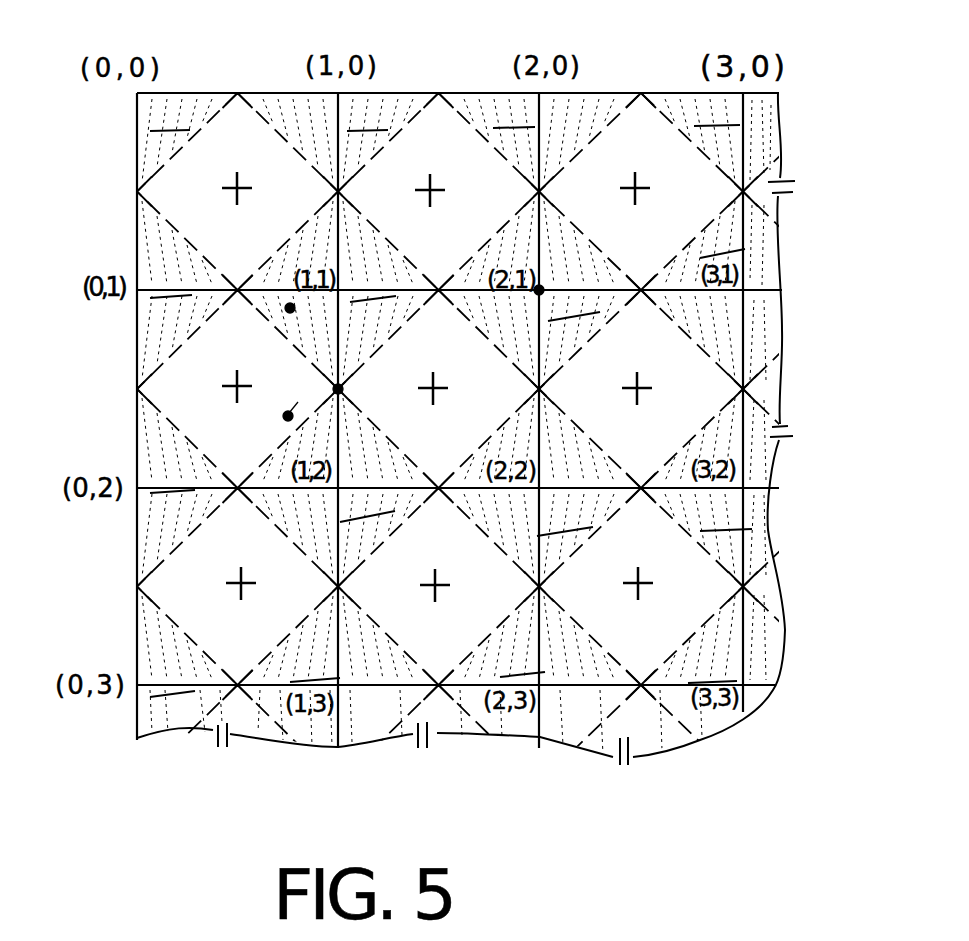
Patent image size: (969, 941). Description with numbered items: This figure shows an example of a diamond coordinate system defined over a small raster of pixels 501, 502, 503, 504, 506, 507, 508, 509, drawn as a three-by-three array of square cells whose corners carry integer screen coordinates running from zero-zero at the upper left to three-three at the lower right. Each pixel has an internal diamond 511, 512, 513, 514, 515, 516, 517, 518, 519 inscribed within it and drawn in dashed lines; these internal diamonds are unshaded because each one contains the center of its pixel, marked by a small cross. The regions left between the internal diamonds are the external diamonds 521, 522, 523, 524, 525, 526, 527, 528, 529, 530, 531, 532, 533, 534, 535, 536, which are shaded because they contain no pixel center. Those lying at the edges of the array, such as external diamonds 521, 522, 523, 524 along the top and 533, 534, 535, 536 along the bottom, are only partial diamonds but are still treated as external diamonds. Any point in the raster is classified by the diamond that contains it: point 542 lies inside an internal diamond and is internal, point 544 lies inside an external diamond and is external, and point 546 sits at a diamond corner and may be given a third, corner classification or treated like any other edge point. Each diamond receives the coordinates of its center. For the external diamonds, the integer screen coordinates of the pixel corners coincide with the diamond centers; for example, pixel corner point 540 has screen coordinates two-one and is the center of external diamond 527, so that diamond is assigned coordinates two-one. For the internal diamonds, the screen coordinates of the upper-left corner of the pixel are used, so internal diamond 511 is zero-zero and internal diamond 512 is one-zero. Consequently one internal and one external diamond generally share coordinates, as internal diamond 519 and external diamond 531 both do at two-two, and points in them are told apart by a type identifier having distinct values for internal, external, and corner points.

The pixel 501 is at (188, 93).
The pixel 502 is at (380, 93).
The pixel 503 is at (580, 93).
The pixel 504 is at (137, 322).
The pixel 506 is at (742, 318).
The pixel 507 is at (150, 522).
The pixel 508 is at (360, 733).
The pixel 509 is at (737, 657).
The internal diamond 511 is at (265, 253).
The internal diamond 512 is at (457, 240).
The internal diamond 513 is at (664, 241).
The internal diamond 514 is at (260, 453).
The internal diamond 515 is at (462, 441).
The internal diamond 516 is at (660, 436).
The internal diamond 517 is at (253, 640).
The internal diamond 518 is at (458, 636).
The internal diamond 519 is at (660, 636).
The external diamond 521 is at (170, 119).
The external diamond 522 is at (367, 119).
The external diamond 523 is at (512, 116).
The external diamond 524 is at (715, 115).
The external diamond 525 is at (170, 285).
The external diamond 526 is at (372, 287).
The external diamond 527 is at (574, 307).
The external diamond 528 is at (722, 249).
The external diamond 529 is at (171, 479).
The external diamond 530 is at (367, 507).
The external diamond 531 is at (565, 519).
The external diamond 532 is at (726, 516).
The external diamond 533 is at (171, 680).
The external diamond 534 is at (315, 669).
The external diamond 535 is at (526, 664).
The external diamond 536 is at (712, 669).
The pixel corner point 540 is at (540, 290).
The internal point 542 is at (292, 399).
The external point 544 is at (288, 311).
The corner point 546 is at (338, 388).